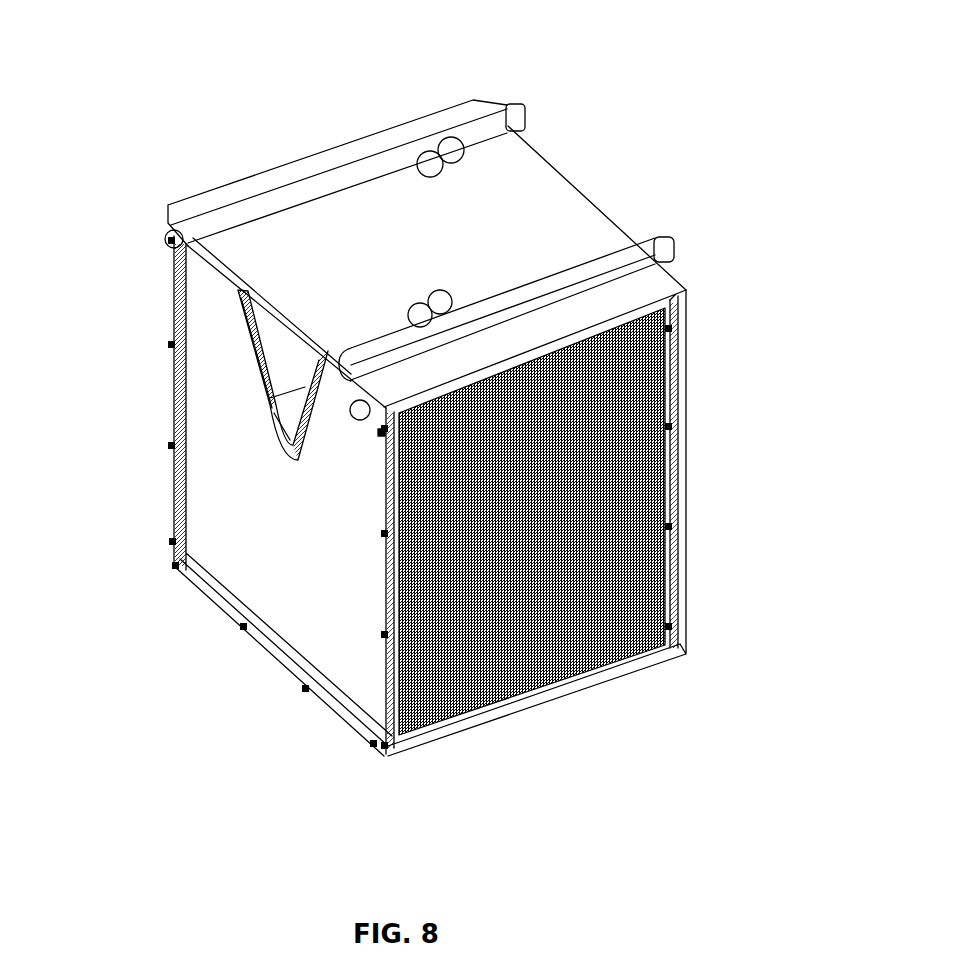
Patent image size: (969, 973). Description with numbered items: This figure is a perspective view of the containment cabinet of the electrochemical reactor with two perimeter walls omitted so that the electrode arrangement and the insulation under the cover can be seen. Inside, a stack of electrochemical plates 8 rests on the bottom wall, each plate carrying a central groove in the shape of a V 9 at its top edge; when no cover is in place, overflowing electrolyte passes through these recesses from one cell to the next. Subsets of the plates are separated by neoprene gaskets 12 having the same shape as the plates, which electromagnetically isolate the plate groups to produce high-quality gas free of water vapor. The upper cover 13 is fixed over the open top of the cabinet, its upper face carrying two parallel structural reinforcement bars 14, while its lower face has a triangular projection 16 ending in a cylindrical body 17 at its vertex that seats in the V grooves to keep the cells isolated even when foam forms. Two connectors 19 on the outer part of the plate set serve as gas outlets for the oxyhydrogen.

The electrochemical plates 8 is at (500, 570).
The central groove in the shape of a V 9 is at (247, 332).
The neoprene gaskets 12 is at (283, 538).
The upper cover 13 is at (490, 200).
The structural reinforcement bar 14 is at (353, 157).
The triangular projection 16 is at (278, 342).
The cylindrical body 17 is at (265, 415).
The connectors 19 is at (433, 143).